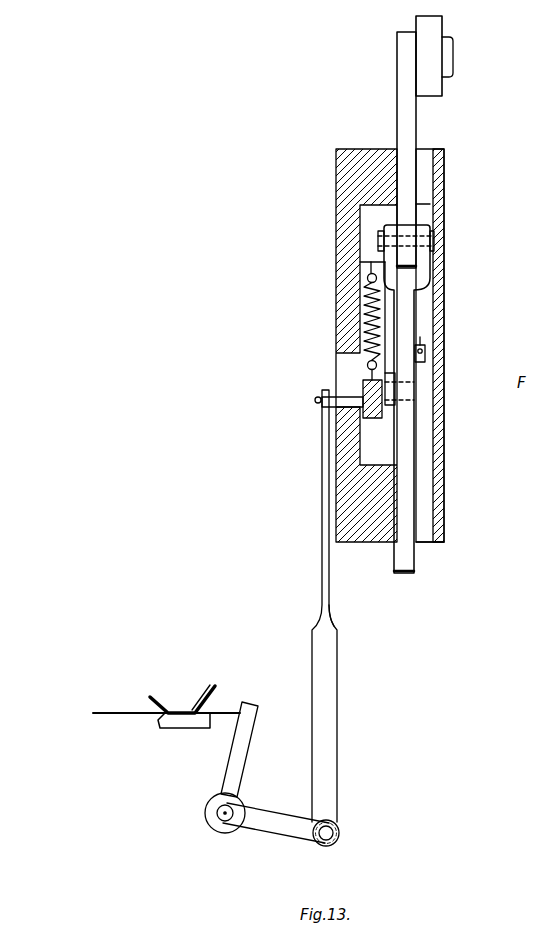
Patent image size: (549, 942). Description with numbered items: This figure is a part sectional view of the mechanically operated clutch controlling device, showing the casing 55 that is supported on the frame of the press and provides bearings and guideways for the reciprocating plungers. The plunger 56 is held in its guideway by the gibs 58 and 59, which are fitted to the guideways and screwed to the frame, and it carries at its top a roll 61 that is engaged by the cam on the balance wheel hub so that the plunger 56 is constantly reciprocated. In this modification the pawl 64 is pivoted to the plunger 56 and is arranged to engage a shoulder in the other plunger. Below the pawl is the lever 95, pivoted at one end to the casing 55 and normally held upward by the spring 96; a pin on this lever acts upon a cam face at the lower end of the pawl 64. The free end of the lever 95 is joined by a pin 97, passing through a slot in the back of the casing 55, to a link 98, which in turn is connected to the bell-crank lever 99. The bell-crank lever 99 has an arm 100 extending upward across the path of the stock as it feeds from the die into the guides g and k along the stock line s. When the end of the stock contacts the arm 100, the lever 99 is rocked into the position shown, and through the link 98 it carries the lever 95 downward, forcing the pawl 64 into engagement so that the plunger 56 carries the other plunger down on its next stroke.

The casing 55 is at (337, 300).
The plunger 56 is at (397, 126).
The gib 58 is at (427, 155).
The gib 59 is at (426, 540).
The roll 61 is at (440, 96).
The pawl 64 is at (408, 323).
The lever 95 is at (380, 418).
The spring 96 is at (368, 317).
The pin 97 is at (338, 400).
The link 98 is at (335, 652).
The bell-crank lever 99 is at (246, 808).
The arm 100 is at (254, 708).
The guide g is at (163, 705).
The guide k is at (183, 728).
The plate s is at (130, 712).